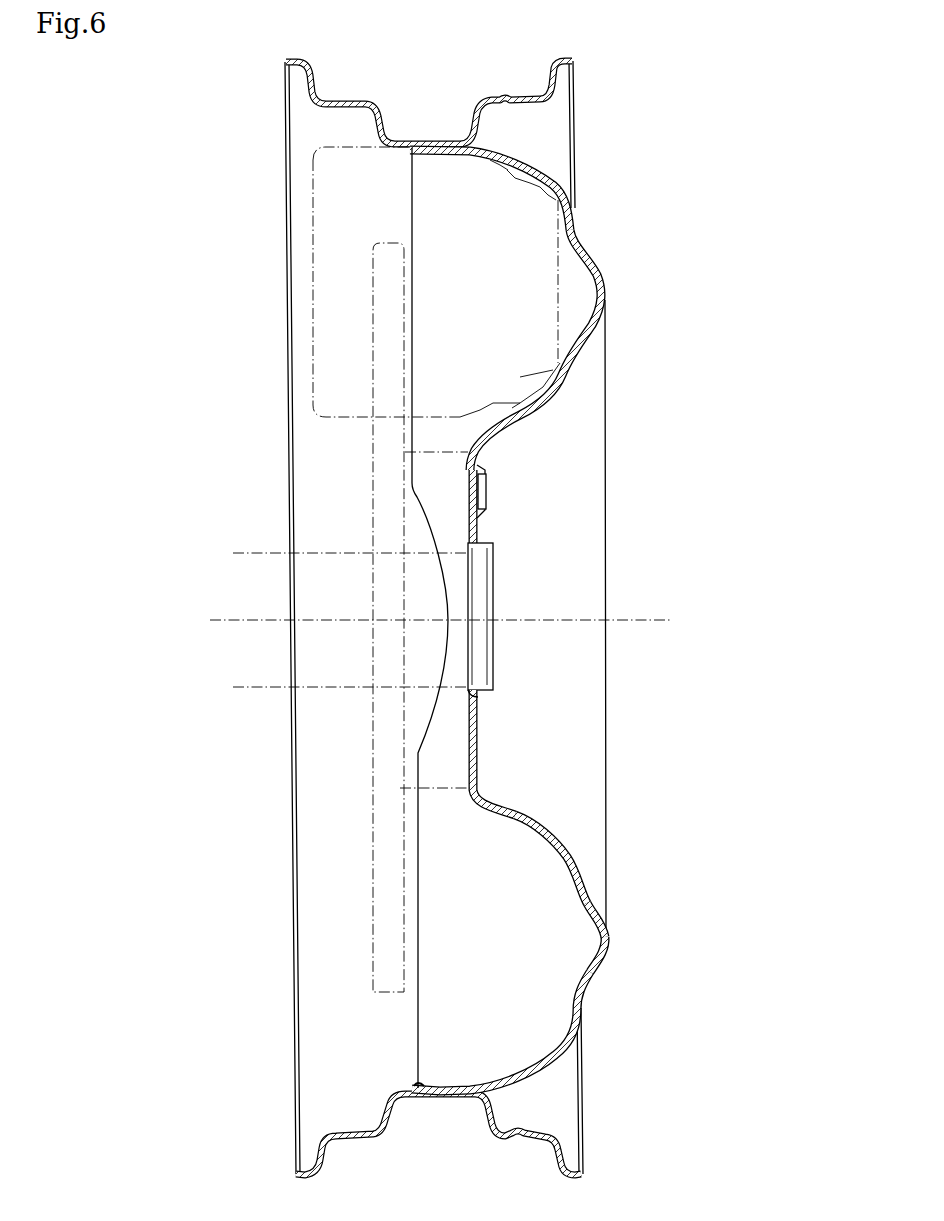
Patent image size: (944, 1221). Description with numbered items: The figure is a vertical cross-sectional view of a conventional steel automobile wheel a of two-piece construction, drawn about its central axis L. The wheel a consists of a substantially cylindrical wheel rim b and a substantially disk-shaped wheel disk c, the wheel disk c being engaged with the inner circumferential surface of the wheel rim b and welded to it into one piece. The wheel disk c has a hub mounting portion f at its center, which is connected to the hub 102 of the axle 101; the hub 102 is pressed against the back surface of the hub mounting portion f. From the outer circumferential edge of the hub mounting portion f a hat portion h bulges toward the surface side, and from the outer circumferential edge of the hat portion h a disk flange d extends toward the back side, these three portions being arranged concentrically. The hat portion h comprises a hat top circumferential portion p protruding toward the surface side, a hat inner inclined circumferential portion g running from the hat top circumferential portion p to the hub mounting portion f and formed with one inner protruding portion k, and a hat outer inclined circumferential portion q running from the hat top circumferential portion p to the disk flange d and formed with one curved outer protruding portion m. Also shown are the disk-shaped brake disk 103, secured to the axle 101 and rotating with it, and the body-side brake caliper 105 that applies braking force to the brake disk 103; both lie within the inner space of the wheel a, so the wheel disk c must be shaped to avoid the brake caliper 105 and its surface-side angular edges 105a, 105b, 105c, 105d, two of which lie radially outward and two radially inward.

The automobile wheel a is at (803, 305).
The wheel rim b is at (512, 93).
The outer protruding portion m is at (553, 181).
The inner protruding portion k is at (563, 387).
The brake caliper 105 is at (560, 292).
The surface-side angular edge 105a is at (520, 403).
The surface-side angular edge 105b is at (558, 363).
The surface-side angular edge 105c is at (553, 197).
The surface-side angular edge 105d is at (500, 163).
The axle 101 is at (333, 553).
The hub 102 is at (455, 788).
The brake disk 103 is at (377, 740).
The central axis L is at (210, 620).
The hub mounting portion f is at (478, 750).
The hat inner inclined circumferential portion g is at (543, 827).
The wheel disk c is at (590, 897).
The hat top circumferential portion p is at (612, 940).
The hat portion h is at (603, 968).
The hat outer inclined circumferential portion q is at (556, 1060).
The disk flange d is at (420, 1085).